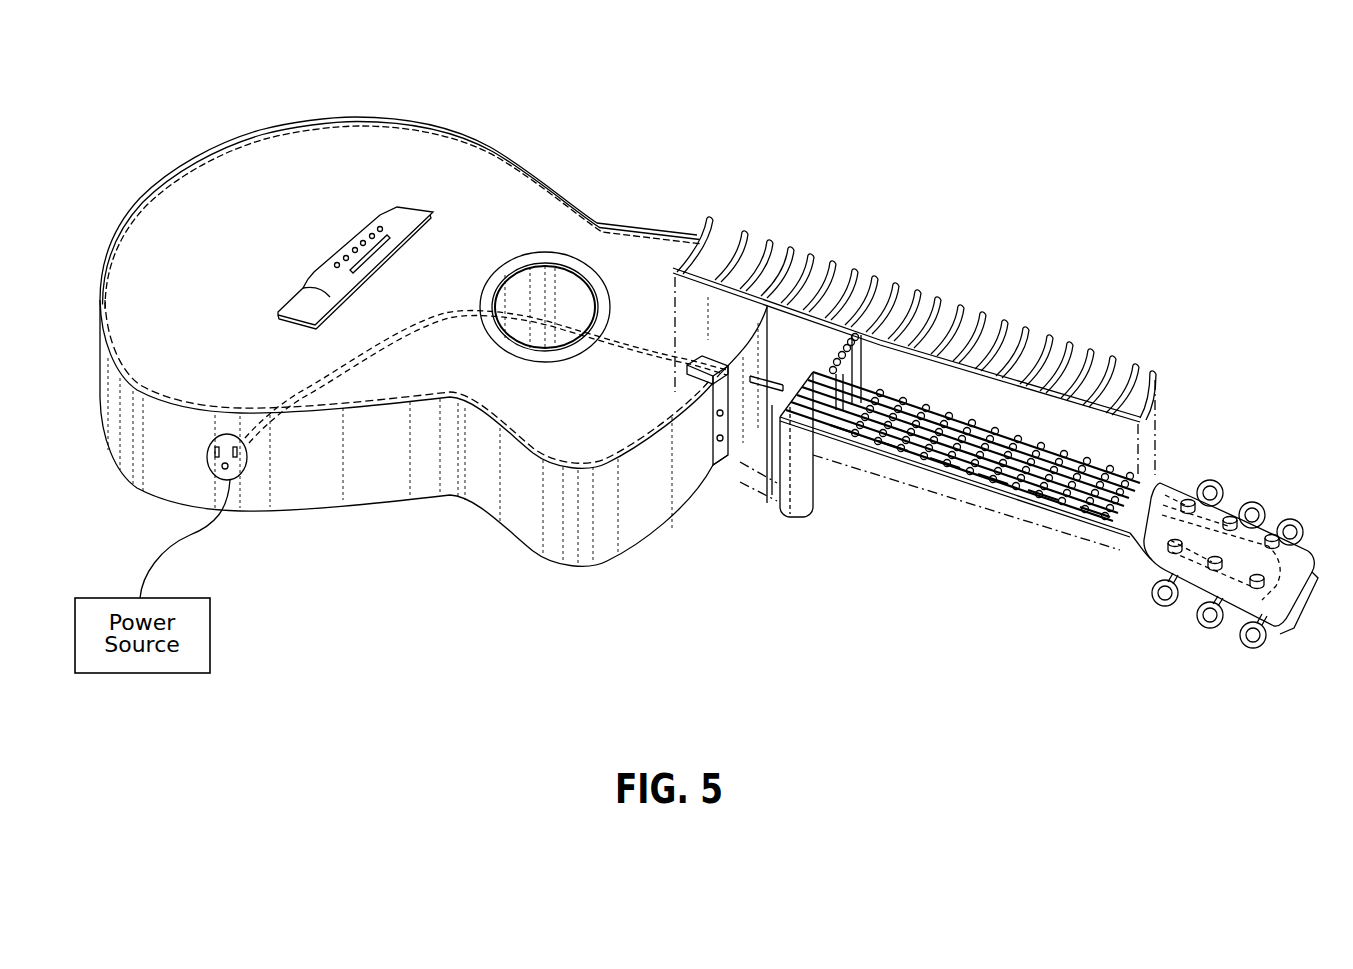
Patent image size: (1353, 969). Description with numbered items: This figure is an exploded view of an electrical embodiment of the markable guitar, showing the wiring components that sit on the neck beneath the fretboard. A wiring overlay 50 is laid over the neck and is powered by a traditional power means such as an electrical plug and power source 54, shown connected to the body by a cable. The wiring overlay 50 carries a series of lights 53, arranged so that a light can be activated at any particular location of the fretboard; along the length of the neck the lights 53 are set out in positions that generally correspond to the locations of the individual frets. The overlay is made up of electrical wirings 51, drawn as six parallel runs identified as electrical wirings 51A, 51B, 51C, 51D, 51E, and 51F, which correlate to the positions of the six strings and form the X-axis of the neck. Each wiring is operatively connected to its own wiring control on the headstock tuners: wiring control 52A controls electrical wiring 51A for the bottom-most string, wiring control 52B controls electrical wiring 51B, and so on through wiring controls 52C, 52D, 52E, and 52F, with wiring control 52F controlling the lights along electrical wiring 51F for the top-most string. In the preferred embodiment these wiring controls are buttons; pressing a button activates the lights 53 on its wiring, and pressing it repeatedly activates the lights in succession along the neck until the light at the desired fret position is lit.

The wiring overlay 50 is at (960, 446).
The electrical wirings 51 is at (1100, 460).
The electrical wiring 51A is at (843, 435).
The electrical wiring 51B is at (890, 445).
The electrical wiring 51C is at (943, 465).
The electrical wiring 51D is at (990, 475).
The electrical wiring 51E is at (1040, 492).
The electrical wiring 51F is at (1090, 507).
The wiring control 52A is at (1160, 600).
The wiring control 52B is at (1207, 623).
The wiring control 52C is at (1257, 648).
The wiring control 52D is at (1302, 535).
The wiring control 52E is at (1256, 502).
The wiring control 52F is at (1212, 480).
The series of lights 53 is at (833, 366).
The power source 54 is at (243, 470).